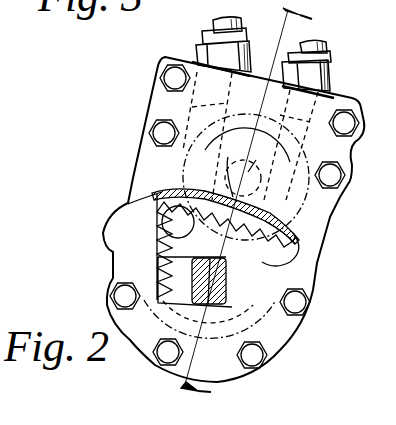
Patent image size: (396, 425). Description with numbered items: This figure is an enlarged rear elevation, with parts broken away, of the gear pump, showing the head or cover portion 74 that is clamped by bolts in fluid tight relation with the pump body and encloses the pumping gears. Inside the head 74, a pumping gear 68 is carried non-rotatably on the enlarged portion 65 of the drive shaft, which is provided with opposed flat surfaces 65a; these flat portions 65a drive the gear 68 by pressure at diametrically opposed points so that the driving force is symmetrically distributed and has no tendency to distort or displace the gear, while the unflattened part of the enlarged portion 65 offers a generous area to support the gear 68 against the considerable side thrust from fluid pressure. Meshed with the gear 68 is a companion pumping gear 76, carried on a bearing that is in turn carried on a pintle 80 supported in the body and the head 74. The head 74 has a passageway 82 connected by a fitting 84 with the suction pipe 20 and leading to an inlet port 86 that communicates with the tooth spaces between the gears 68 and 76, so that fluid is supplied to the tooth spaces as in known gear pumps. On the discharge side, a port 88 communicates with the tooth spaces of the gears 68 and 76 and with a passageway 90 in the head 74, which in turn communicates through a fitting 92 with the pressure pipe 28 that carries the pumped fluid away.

The suction pipe 20 is at (212, 22).
The pressure pipe 28 is at (326, 47).
The fitting 84 is at (192, 62).
The fitting 92 is at (328, 96).
The head or cover portion 74 is at (280, 338).
The companion pumping gear 76 is at (228, 170).
The pintle 80 is at (257, 159).
The passageway 82 is at (172, 190).
The inlet port 86 is at (138, 201).
The passageway 90 is at (288, 207).
The enlarged portion 65 is at (157, 256).
The flat surfaces 65a is at (290, 264).
The pumping gear 68 is at (157, 282).
The port 88 is at (293, 233).